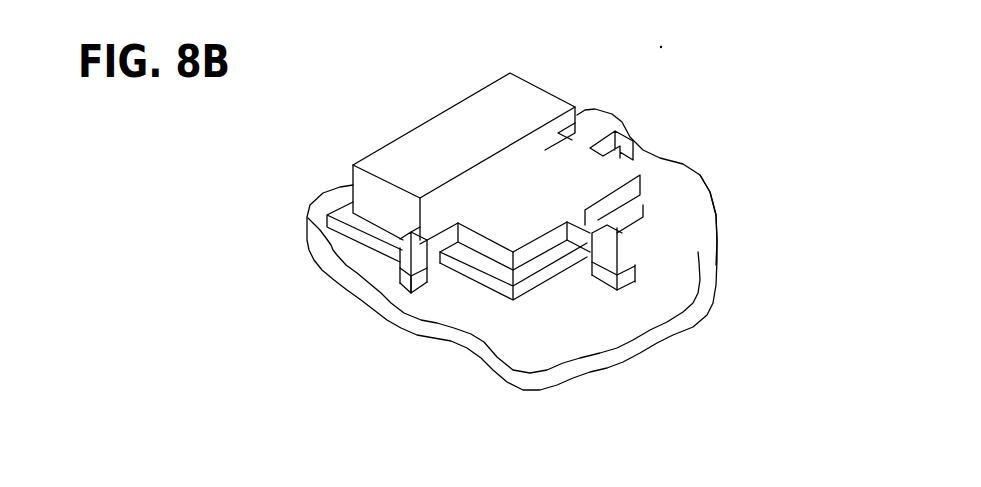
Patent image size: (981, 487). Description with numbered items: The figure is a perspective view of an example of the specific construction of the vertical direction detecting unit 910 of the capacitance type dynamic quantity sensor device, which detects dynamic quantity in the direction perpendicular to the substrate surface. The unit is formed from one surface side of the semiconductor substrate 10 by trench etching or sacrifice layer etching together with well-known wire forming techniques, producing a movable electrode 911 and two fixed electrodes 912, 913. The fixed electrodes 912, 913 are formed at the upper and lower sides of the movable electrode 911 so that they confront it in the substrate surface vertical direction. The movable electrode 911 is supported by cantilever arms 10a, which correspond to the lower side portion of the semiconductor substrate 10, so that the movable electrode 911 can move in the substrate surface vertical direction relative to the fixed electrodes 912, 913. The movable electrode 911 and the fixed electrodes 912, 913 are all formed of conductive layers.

The vertical direction detecting unit 910 is at (438, 350).
The movable electrode 911 is at (603, 180).
The fixed electrode 912 is at (527, 300).
The fixed electrode 913 is at (527, 107).
The semiconductor substrate 10 is at (688, 212).
The cantilever arm 10a is at (597, 113).